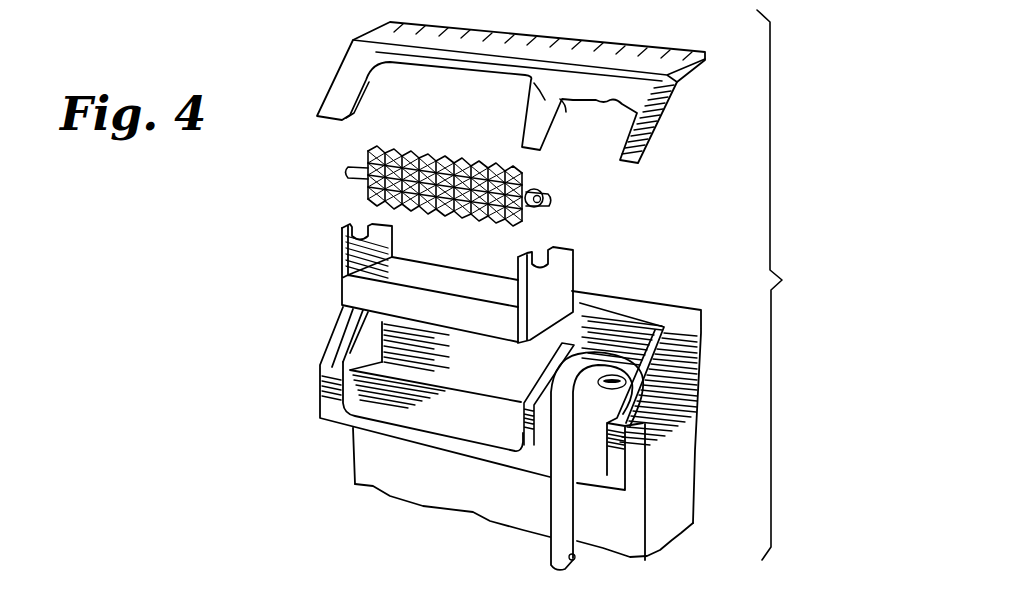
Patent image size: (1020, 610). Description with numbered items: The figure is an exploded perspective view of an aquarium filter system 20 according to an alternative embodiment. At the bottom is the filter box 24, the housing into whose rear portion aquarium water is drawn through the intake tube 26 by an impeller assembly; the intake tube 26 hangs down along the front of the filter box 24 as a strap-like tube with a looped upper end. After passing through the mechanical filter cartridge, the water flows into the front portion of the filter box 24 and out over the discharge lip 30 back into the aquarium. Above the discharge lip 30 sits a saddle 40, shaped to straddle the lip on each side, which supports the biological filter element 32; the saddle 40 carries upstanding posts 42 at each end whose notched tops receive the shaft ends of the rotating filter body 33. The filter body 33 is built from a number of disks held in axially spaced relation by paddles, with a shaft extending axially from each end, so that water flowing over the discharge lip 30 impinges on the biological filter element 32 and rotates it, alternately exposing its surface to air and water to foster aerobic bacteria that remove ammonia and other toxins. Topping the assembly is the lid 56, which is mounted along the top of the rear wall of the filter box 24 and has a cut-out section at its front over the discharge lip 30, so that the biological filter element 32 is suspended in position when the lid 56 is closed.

The filter system 20 is at (311, 273).
The filter box 24 is at (519, 430).
The intake tube 26 is at (562, 522).
The discharge lip 30 is at (407, 405).
The biological filter element 32 is at (445, 173).
The filter body 33 is at (545, 195).
The saddle 40 is at (400, 303).
The bearing posts 42 is at (360, 224).
The lid 56 is at (646, 52).